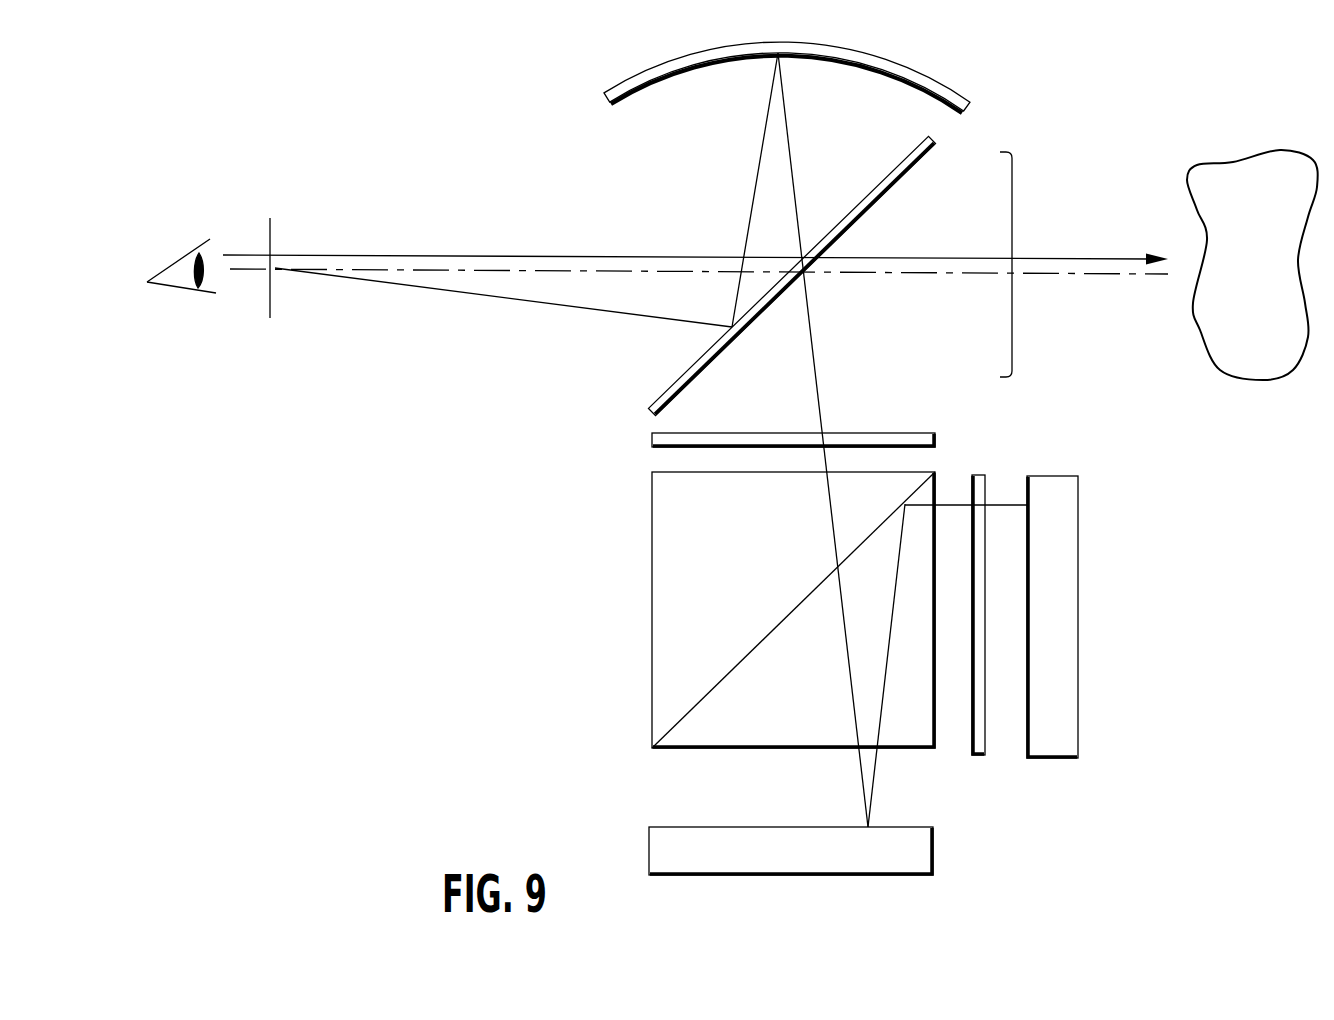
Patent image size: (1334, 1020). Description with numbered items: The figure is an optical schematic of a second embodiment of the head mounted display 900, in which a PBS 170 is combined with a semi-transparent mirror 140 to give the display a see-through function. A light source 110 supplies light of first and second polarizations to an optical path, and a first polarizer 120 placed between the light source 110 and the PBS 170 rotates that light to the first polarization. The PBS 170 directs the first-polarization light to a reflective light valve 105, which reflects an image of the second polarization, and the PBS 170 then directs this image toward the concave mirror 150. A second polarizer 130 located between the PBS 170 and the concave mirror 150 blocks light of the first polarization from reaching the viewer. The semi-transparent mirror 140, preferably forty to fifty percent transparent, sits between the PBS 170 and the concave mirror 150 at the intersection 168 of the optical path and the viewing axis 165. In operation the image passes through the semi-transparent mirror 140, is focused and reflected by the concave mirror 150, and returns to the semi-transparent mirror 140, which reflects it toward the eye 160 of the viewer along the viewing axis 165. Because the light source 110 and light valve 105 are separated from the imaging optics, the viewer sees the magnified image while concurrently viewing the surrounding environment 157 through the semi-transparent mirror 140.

The reflective light valve 105 is at (649, 843).
The light source 110 is at (1048, 760).
The first polarizer 120 is at (976, 758).
The second polarizer 130 is at (940, 444).
The semi-transparent mirror 140 is at (656, 395).
The concave mirror 150 is at (955, 86).
The surrounding environment 157 is at (1259, 345).
The eye 160 is at (168, 243).
The viewing axis 165 is at (1122, 258).
The intersection 168 is at (1013, 275).
The PBS 170 is at (614, 658).
The head mounted display 900 is at (1068, 106).